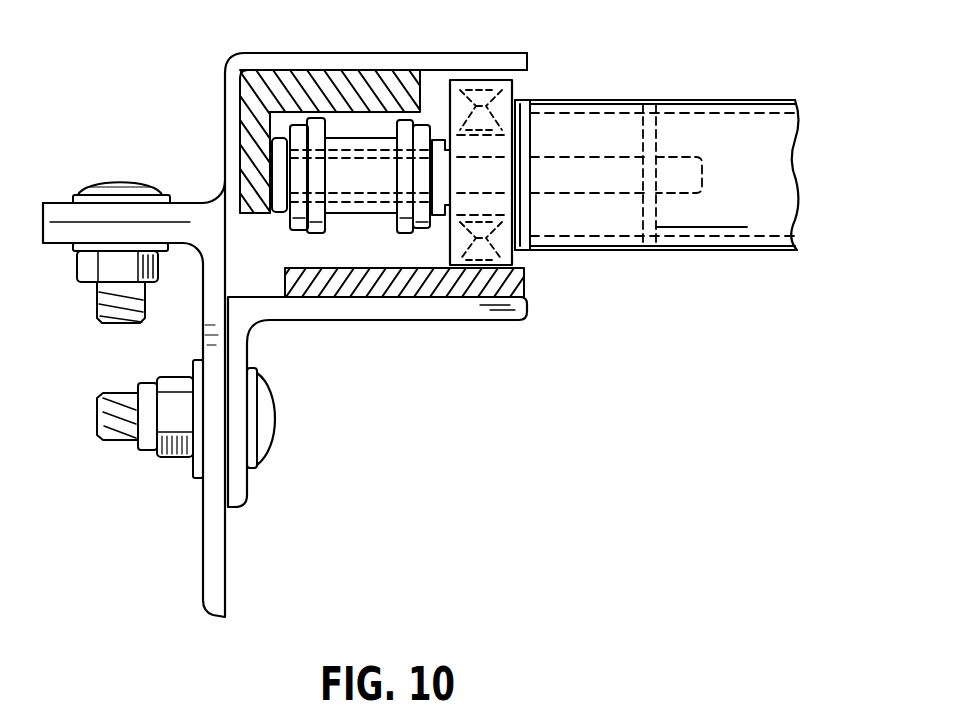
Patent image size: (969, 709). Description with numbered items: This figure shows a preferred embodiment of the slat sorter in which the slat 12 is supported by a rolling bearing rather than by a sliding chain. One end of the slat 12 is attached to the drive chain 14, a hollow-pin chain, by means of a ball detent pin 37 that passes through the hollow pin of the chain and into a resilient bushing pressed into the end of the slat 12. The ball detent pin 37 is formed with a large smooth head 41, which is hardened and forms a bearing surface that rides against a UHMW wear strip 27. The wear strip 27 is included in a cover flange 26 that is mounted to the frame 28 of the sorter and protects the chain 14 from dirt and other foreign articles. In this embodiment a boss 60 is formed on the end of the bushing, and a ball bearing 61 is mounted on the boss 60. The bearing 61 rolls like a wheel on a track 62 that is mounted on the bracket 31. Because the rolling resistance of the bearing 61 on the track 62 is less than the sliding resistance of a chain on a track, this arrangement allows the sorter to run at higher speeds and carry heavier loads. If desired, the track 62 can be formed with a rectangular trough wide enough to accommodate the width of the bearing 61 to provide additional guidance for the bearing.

The slat 12 is at (608, 100).
The drive chain 14 is at (348, 138).
The cover flange 26 is at (250, 57).
The UHMW wear strip 27 is at (392, 100).
The frame 28 is at (215, 333).
The bracket 31 is at (292, 308).
The ball detent pin 37 is at (672, 150).
The head 41 is at (277, 165).
The boss 60 is at (440, 135).
The ball bearing 61 is at (513, 258).
The track 62 is at (430, 287).